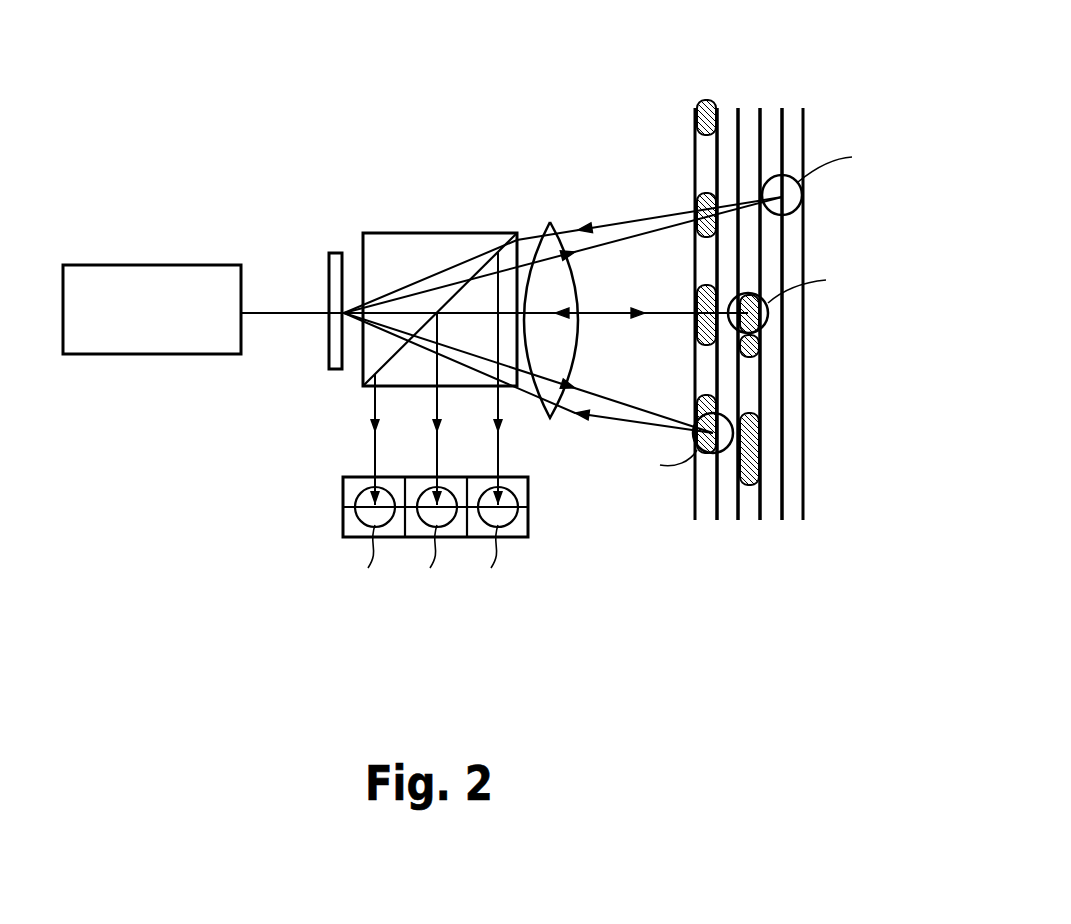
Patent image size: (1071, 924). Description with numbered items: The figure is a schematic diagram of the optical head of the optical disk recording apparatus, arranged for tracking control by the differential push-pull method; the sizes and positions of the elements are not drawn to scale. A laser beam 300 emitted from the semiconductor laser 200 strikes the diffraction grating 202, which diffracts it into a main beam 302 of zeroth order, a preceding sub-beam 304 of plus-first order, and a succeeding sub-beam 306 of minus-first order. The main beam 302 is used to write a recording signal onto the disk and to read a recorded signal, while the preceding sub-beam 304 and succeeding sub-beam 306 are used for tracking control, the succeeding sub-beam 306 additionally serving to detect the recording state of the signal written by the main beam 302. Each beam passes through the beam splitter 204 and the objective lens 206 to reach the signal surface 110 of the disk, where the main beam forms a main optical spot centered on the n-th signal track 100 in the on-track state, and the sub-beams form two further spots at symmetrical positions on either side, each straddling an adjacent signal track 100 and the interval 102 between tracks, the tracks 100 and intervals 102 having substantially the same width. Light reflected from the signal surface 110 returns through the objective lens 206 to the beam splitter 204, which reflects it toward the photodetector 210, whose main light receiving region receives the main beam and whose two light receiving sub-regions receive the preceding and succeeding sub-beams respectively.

The semiconductor laser 200 is at (108, 265).
The laser beam 300 is at (283, 313).
The diffraction grating 202 is at (338, 252).
The beam splitter 204 is at (480, 245).
The preceding sub-beam 304 is at (407, 293).
The main beam 302 is at (603, 310).
The succeeding sub-beam 306 is at (566, 378).
The objective lens 206 is at (540, 420).
The photodetector 210 is at (326, 512).
The signal surface 110 is at (763, 343).
The signal track 100 is at (702, 106).
The interval between adjacent tracks 102 is at (728, 108).